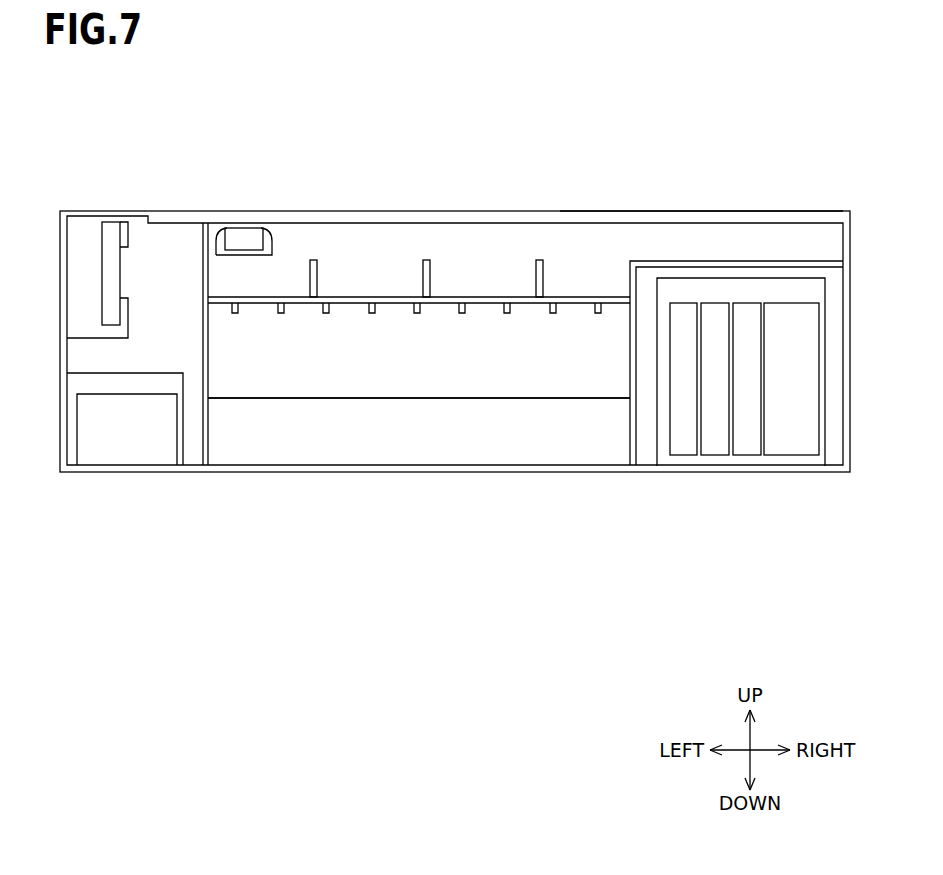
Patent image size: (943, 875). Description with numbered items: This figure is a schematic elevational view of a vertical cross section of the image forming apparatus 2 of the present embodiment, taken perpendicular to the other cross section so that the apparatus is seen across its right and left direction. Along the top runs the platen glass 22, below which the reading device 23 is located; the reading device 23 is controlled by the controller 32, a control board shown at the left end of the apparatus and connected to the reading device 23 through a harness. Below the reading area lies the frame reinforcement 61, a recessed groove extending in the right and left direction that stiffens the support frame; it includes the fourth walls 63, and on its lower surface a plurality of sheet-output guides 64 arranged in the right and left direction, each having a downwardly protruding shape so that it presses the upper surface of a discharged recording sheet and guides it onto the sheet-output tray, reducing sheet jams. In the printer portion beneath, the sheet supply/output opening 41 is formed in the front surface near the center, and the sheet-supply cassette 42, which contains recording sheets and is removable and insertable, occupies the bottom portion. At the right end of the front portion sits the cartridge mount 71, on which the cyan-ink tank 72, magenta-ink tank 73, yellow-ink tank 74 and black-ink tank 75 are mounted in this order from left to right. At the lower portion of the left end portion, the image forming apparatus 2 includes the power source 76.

The image forming apparatus 2 is at (845, 168).
The platen glass 22 is at (669, 215).
The reading device 23 is at (243, 232).
The controller 32 is at (107, 282).
The sheet supply/output opening 41 is at (518, 382).
The sheet-supply cassette 42 is at (423, 445).
The frame reinforcement 61 is at (595, 273).
The fourth walls 63 is at (313, 260).
The sheet-output guides 64 is at (372, 313).
The cartridge mount 71 is at (750, 262).
The cyan-ink tank 72 is at (683, 447).
The magenta-ink tank 73 is at (714, 447).
The yellow-ink tank 74 is at (746, 447).
The black-ink tank 75 is at (790, 447).
The power source 76 is at (130, 462).